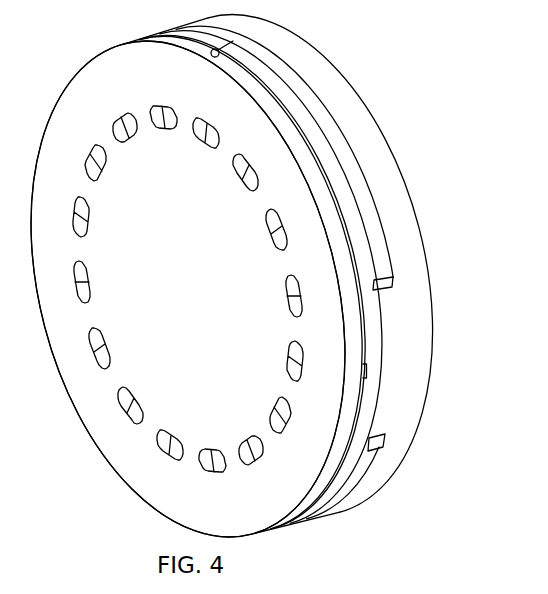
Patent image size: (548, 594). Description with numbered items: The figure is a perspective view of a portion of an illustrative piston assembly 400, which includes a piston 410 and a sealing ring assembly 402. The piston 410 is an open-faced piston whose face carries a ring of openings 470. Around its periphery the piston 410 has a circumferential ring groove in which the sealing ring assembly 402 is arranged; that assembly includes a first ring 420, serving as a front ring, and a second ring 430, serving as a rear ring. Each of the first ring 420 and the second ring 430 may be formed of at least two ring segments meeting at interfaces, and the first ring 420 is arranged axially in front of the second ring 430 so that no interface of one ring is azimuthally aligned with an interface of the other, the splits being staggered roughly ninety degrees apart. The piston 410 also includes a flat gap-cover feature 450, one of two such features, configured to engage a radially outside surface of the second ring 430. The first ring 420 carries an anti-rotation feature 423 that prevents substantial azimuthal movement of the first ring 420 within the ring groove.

The piston assembly 400 is at (57, 56).
The sealing ring assembly 402 is at (445, 33).
The piston 410 is at (204, 293).
The first ring 420 is at (290, 98).
The anti-rotation feature 423 is at (364, 371).
The second ring 430 is at (340, 130).
The gap-cover feature 450 is at (394, 310).
The openings 470 is at (126, 418).